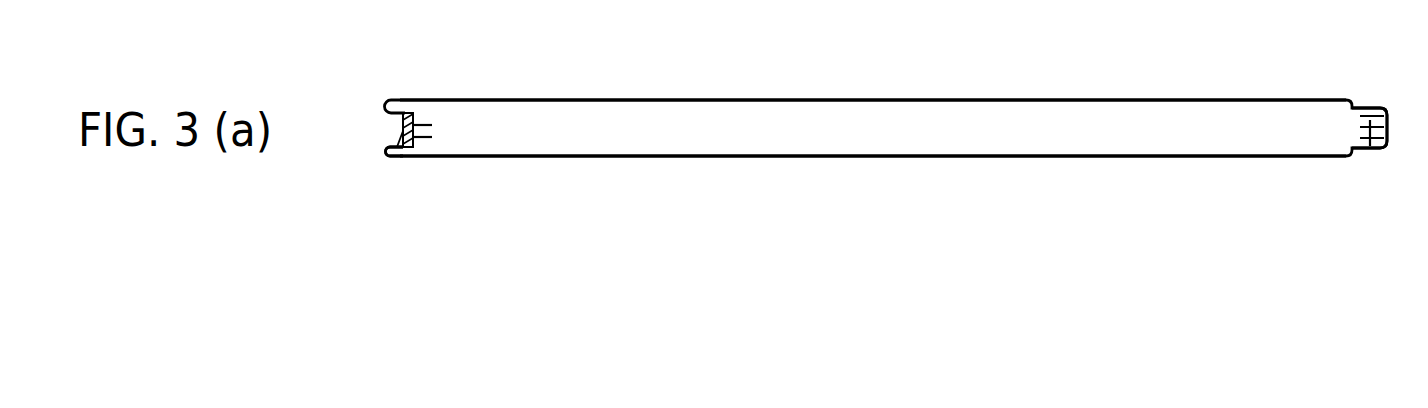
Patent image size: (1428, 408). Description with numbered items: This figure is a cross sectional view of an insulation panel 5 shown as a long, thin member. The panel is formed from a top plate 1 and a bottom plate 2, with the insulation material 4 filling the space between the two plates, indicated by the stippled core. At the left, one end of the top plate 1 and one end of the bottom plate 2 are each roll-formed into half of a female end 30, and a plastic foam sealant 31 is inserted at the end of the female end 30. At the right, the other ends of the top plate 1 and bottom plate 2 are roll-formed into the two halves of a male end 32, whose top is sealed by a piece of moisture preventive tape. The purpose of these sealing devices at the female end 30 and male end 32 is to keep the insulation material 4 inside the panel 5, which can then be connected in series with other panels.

The top plate 1 is at (912, 100).
The bottom plate 2 is at (903, 157).
The insulation material 4 is at (1025, 125).
The insulation panel 5 is at (650, 100).
The female end 30 is at (392, 157).
The plastic foam sealant 31 is at (413, 143).
The male end 32 is at (1368, 133).